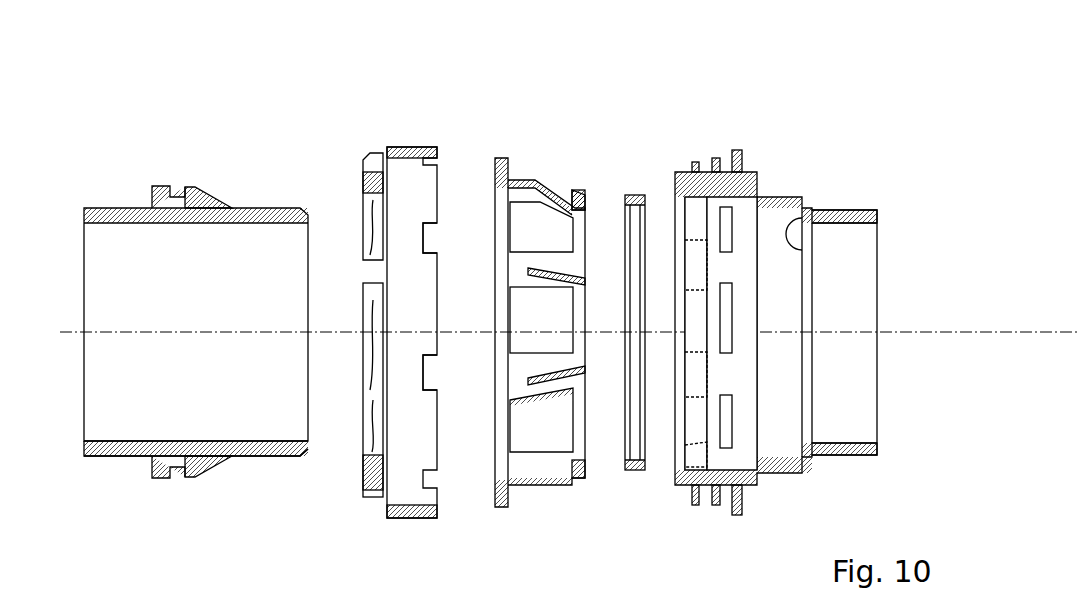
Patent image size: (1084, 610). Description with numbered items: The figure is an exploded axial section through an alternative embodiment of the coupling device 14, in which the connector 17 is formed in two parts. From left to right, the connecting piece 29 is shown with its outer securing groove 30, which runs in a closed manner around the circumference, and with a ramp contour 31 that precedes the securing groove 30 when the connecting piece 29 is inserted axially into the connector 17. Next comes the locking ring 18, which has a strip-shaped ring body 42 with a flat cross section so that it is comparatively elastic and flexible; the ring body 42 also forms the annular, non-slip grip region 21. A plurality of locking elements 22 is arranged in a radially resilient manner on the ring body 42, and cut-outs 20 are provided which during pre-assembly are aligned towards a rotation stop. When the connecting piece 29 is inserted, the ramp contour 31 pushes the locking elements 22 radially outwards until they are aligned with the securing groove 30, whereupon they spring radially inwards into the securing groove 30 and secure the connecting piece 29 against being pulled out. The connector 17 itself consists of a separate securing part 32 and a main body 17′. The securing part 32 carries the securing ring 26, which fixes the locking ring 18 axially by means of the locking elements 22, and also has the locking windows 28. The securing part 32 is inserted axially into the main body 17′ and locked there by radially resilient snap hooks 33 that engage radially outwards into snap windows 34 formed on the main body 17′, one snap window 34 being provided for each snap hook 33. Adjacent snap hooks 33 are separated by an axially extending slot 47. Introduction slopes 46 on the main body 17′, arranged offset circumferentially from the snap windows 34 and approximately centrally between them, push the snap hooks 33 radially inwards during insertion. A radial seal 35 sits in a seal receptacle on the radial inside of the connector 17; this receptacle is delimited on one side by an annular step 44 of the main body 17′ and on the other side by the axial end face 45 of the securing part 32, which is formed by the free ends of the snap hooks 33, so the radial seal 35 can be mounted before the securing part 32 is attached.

The coupling device 14 is at (827, 133).
The connector 17 is at (629, 328).
The main body 17′ is at (794, 257).
The locking ring 18 is at (400, 150).
The cut-out 20 is at (426, 238).
The grip region 21 is at (405, 284).
The locking element 22 is at (373, 215).
The securing ring 26 is at (501, 157).
The locking window 28 is at (535, 214).
The connecting piece 29 is at (121, 210).
The securing groove 30 is at (178, 196).
The ramp contour 31 is at (208, 198).
The securing part 32 is at (543, 291).
The snap hook 33 is at (578, 190).
The snap window 34 is at (727, 300).
The radial seal 35 is at (635, 193).
The ring body 42 is at (408, 148).
The annular step 44 is at (802, 240).
The axial end face 45 is at (582, 208).
The introduction slope 46 is at (690, 270).
The slot 47 is at (532, 271).